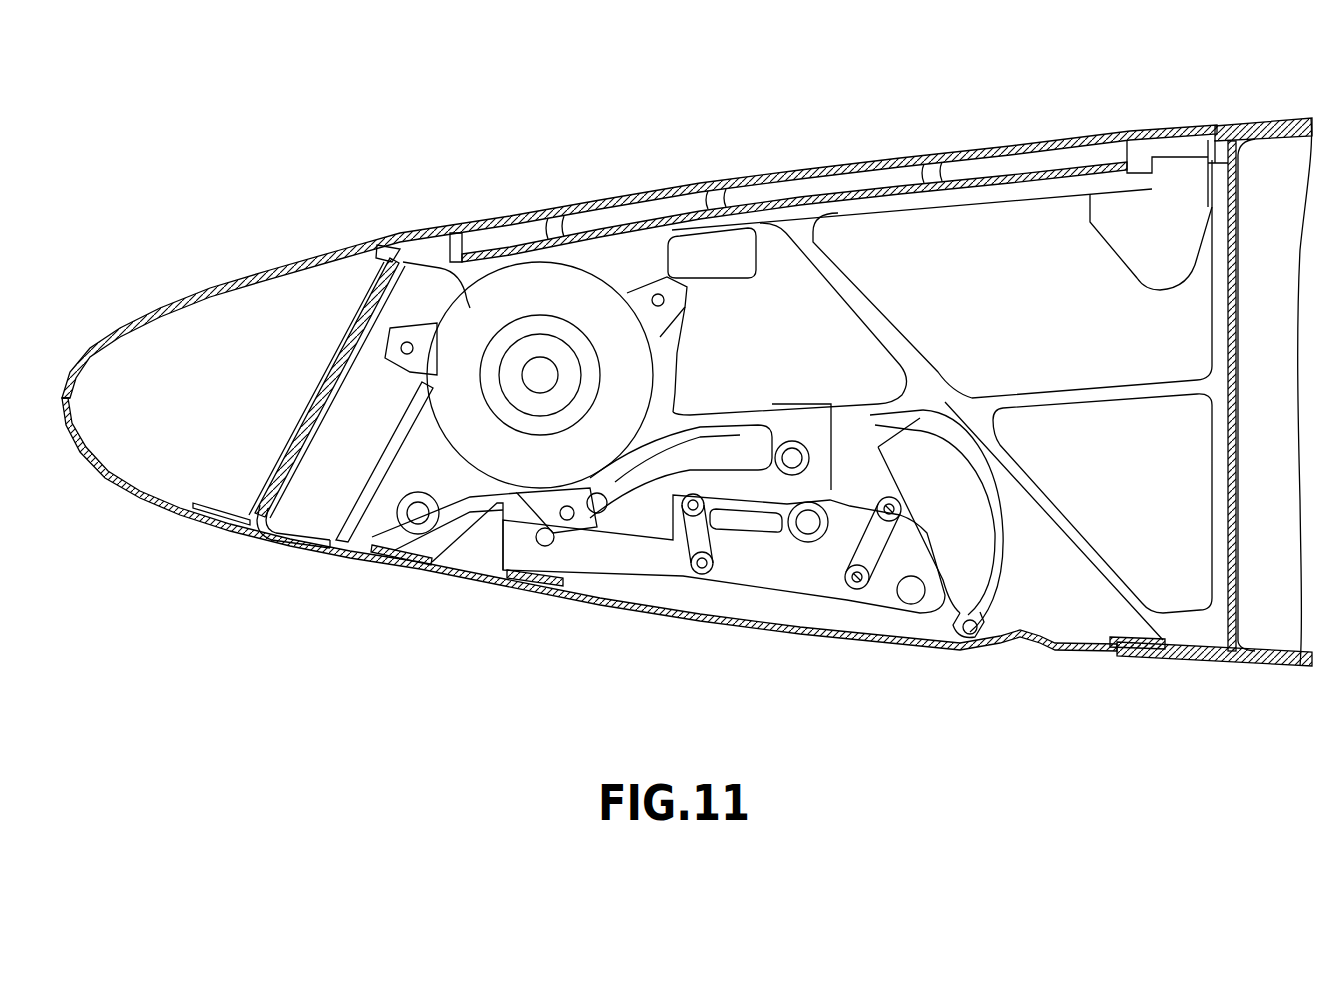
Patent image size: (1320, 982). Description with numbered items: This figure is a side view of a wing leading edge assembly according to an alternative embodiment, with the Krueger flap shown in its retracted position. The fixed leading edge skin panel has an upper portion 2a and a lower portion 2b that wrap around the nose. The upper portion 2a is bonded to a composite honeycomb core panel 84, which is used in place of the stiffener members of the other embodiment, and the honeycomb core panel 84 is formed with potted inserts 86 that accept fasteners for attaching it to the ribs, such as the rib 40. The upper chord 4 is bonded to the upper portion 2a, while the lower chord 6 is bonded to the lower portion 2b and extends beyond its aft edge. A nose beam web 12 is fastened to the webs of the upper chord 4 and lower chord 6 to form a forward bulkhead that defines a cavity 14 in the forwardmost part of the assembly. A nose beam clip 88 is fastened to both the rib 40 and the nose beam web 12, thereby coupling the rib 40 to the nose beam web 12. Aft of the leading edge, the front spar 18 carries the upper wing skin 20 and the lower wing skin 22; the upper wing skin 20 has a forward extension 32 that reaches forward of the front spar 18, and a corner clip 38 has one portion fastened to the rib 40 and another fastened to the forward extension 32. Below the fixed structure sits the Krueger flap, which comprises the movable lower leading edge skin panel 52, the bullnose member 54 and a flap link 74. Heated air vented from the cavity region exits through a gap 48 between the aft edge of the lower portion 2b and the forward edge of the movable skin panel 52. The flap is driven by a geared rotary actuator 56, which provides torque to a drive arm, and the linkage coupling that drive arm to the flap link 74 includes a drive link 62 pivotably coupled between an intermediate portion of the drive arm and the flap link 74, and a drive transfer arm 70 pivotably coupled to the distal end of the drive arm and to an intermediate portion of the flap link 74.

The upper portion of fixed leading edge skin panel 2a is at (256, 262).
The lower portion of fixed leading edge skin panel 2b is at (264, 530).
The upper chord 4 is at (370, 247).
The lower chord 6 is at (258, 498).
The nose beam web 12 is at (338, 367).
The cavity 14 is at (103, 317).
The front spar 18 is at (1240, 358).
The upper wing skin 20 is at (1277, 120).
The lower wing skin 22 is at (1192, 657).
The forward extension 32 is at (1193, 130).
The corner clip 38 is at (1127, 273).
The rib 40 is at (1087, 563).
The gap 48 is at (318, 566).
The movable lower leading edge skin panel 52 is at (682, 616).
The bullnose member 54 is at (975, 572).
The geared rotary actuator 56 is at (517, 510).
The drive link 62 is at (723, 450).
The drive transfer arm 70 is at (857, 418).
The flap link 74 is at (780, 563).
The honeycomb core panel 84 is at (497, 243).
The potted insert 86 is at (743, 180).
The nose beam clip 88 is at (325, 403).